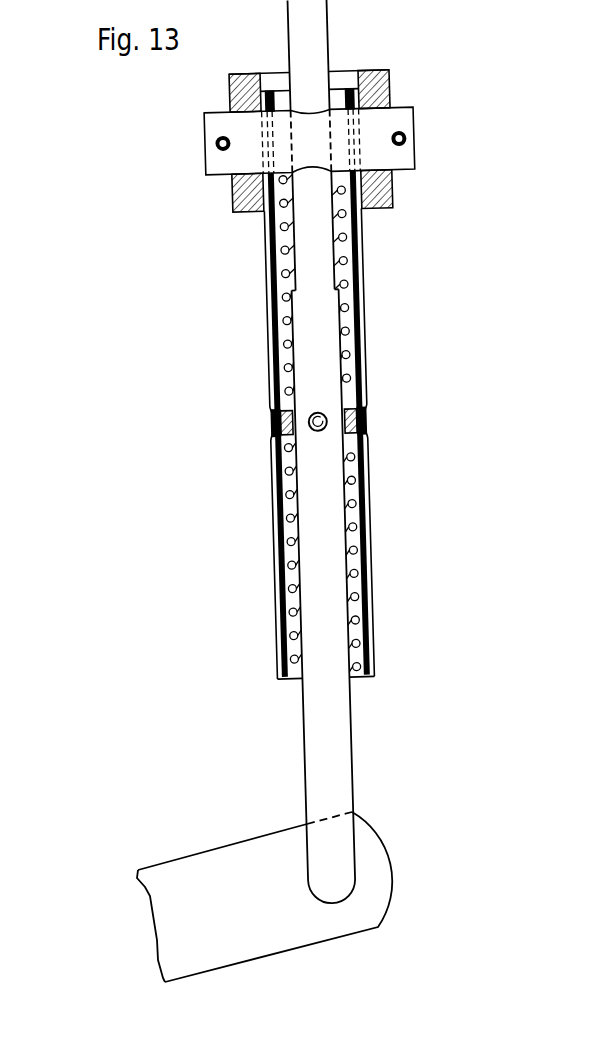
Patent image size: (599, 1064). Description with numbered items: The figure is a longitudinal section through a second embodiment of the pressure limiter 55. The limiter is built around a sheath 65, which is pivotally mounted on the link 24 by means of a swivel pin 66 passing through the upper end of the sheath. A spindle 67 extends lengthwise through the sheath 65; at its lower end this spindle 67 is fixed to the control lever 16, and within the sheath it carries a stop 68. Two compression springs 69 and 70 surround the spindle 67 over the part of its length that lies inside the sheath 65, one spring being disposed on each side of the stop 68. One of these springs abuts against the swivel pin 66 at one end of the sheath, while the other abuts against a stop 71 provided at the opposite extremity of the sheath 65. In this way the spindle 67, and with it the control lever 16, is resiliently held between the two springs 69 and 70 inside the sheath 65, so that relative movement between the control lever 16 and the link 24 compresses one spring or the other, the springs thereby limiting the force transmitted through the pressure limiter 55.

The control lever 16 is at (367, 893).
The link 24 is at (385, 89).
The pressure limiter 55 is at (379, 437).
The sheath 65 is at (360, 317).
The swivel pin 66 is at (378, 158).
The spindle 67 is at (328, 492).
The stop 68 is at (327, 421).
The compression spring 69 is at (360, 260).
The compression spring 70 is at (370, 574).
The stop 71 is at (362, 682).